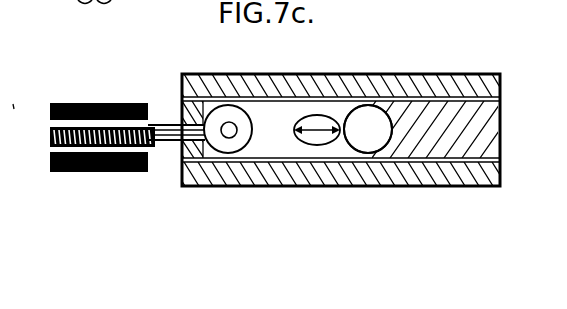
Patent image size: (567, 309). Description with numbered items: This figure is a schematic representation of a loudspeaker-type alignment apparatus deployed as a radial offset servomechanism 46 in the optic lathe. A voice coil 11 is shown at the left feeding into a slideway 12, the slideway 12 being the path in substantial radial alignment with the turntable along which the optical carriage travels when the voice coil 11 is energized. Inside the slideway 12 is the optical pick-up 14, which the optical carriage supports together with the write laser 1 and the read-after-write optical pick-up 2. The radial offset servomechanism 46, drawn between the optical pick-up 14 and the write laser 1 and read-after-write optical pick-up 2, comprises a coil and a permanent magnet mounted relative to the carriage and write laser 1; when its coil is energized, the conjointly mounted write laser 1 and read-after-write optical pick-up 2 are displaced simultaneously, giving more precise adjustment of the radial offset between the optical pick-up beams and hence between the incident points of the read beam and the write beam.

The write laser 1 is at (348, 152).
The read-after-write optical pick-up 2 is at (378, 152).
The voice coil 11 is at (123, 172).
The slideway 12 is at (475, 190).
The optical pick-up 14 is at (227, 138).
The radial offset servomechanism 46 is at (330, 143).